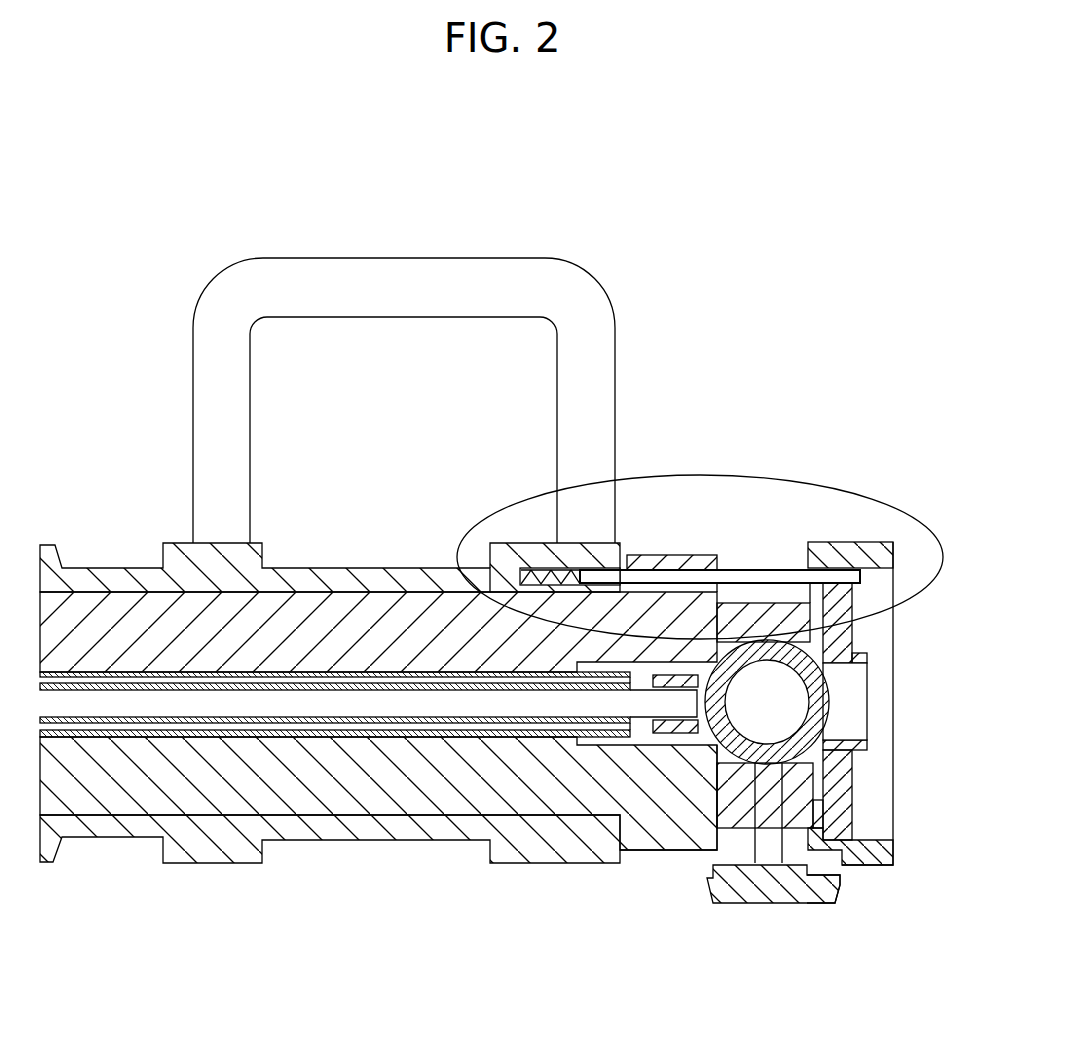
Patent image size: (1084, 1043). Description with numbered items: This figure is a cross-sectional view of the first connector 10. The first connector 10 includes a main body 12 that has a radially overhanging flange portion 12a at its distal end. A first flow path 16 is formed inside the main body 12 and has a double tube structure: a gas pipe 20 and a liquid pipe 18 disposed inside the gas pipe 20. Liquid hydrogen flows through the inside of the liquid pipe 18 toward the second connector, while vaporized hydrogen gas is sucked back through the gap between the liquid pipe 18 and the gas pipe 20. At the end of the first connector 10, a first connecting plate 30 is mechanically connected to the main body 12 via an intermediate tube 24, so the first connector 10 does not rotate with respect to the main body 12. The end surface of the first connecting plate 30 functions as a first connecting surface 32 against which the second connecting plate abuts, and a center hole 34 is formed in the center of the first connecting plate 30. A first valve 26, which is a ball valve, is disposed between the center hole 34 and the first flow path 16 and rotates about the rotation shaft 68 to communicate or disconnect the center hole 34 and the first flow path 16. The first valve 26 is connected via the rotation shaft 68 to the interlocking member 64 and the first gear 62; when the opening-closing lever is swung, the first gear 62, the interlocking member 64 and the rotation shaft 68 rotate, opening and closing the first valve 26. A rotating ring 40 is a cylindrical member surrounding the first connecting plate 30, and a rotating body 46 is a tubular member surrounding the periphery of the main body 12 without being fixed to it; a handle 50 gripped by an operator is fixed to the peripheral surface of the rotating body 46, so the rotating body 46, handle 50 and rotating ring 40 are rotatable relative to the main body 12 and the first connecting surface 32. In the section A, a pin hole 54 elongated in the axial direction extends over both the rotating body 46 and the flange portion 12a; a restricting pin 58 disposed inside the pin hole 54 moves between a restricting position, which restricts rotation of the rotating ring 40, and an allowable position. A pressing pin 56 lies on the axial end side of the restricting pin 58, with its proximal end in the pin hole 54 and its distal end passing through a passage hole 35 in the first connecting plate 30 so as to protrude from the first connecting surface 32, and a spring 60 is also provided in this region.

The first connector 10 is at (657, 236).
The main body 12 is at (392, 790).
The flange portion 12a is at (688, 853).
The first flow path 16 is at (547, 913).
The liquid pipe 18 is at (660, 735).
The gas pipe 20 is at (606, 735).
The intermediate tube 24 is at (733, 830).
The first valve 26 is at (824, 724).
The first connecting plate 30 is at (853, 636).
The first connecting surface 32 is at (843, 842).
The center hole 34 is at (855, 700).
The passage hole 35 is at (838, 572).
The rotating ring 40 is at (893, 858).
The rotating body 46 is at (302, 566).
The handle 50 is at (467, 258).
The pin hole 54 is at (657, 570).
The pressing pin 56 is at (757, 568).
The restricting pin 58 is at (604, 575).
The spring 60 is at (578, 566).
The first gear 62 is at (757, 885).
The interlocking member 64 is at (814, 868).
The rotation shaft 68 is at (790, 848).
The section A is at (806, 478).